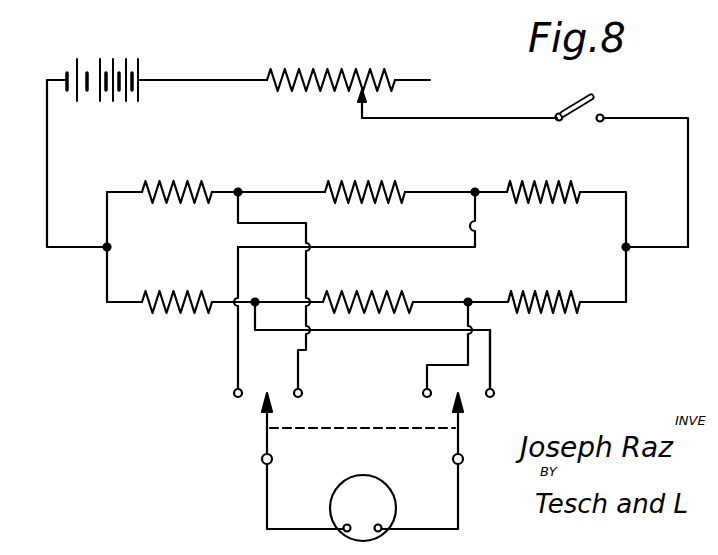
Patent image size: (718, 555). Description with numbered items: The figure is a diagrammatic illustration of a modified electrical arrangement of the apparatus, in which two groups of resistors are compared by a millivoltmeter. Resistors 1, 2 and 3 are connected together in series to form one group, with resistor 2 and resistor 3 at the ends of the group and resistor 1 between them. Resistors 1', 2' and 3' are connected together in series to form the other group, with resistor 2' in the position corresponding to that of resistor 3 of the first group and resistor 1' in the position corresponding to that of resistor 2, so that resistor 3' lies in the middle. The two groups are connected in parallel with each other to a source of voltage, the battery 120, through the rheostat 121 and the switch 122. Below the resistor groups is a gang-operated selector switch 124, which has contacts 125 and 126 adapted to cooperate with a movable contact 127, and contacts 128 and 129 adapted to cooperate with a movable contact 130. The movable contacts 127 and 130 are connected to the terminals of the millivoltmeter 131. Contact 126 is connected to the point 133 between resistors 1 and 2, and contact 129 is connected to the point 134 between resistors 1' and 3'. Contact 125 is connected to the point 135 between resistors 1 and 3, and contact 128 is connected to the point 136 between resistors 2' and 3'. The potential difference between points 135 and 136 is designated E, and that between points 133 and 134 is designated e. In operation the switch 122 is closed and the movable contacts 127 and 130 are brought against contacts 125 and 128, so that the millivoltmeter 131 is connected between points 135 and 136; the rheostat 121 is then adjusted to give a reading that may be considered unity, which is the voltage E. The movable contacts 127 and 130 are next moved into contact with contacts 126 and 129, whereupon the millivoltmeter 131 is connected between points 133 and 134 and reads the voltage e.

The battery 120 is at (98, 57).
The rheostat 121 is at (333, 65).
The switch 122 is at (598, 108).
The resistor 2 is at (190, 172).
The point between resistors 1 and 2 133 is at (241, 189).
The resistor 1 is at (356, 173).
The point between resistors 1 and 3 135 is at (477, 187).
The resistor 3 is at (581, 222).
The resistor 1' is at (198, 283).
The point between resistors 1' and 3' 134 is at (257, 298).
The resistor 3' is at (361, 284).
The point between resistors 2' and 3' 136 is at (467, 296).
The resistor 2' is at (547, 284).
The contact 125 is at (233, 393).
The contact 126 is at (303, 393).
The contact 128 is at (423, 392).
The contact 129 is at (497, 392).
The gang-operated selector switch 124 is at (495, 376).
The movable contact 127 is at (265, 433).
The movable contact 130 is at (460, 420).
The millivoltmeter 131 is at (336, 489).